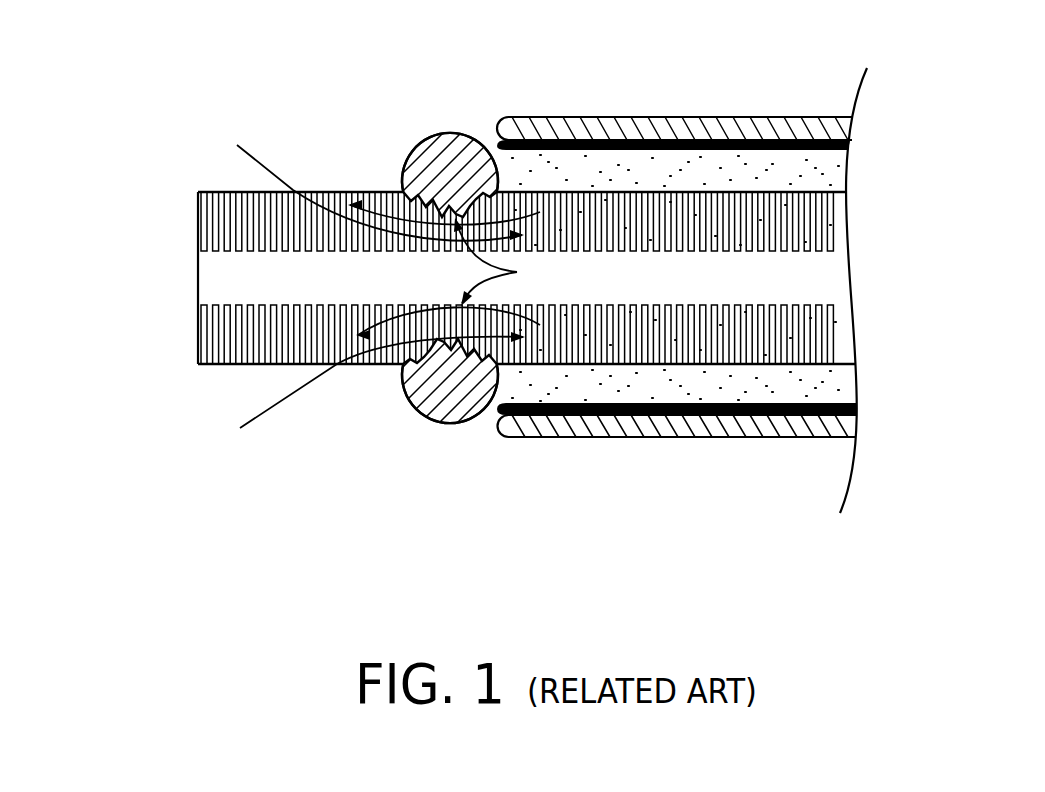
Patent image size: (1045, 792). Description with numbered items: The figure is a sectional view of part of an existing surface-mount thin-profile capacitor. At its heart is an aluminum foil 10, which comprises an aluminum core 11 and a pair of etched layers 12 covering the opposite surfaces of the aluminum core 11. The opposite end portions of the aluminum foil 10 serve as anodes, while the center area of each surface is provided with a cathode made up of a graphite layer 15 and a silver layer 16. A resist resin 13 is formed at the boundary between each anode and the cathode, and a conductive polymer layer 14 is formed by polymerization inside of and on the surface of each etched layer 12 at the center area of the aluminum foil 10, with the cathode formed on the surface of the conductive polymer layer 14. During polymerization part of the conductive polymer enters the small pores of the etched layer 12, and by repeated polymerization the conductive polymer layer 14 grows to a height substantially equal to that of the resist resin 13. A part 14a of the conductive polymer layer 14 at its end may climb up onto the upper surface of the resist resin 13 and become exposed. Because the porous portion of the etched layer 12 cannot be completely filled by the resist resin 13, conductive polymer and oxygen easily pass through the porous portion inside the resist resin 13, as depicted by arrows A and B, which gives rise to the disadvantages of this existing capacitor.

The aluminum foil 10 is at (103, 202).
The aluminum core 11 is at (220, 283).
The etched layer 12 is at (217, 200).
The resist resin 13 is at (413, 155).
The conductive polymer layer 14 is at (813, 174).
The part of the conductive polymer layer 14a is at (475, 133).
The graphite layer 15 is at (790, 137).
The silver layer 16 is at (685, 117).
The arrow A is at (497, 262).
The arrow B is at (273, 168).